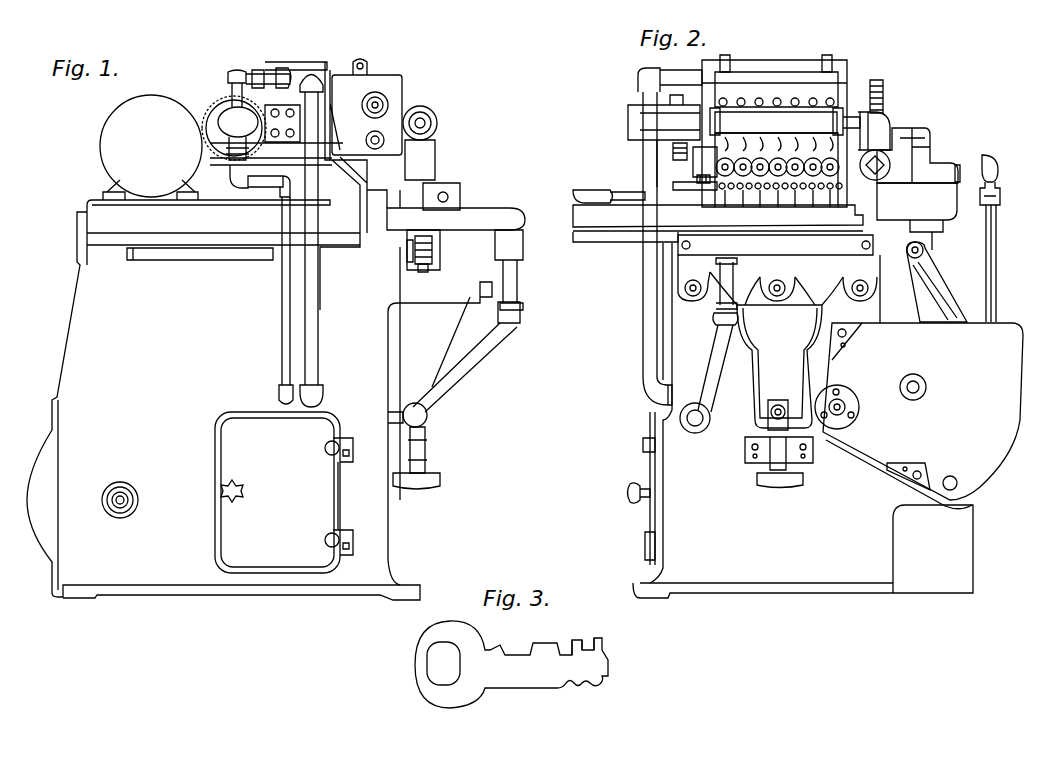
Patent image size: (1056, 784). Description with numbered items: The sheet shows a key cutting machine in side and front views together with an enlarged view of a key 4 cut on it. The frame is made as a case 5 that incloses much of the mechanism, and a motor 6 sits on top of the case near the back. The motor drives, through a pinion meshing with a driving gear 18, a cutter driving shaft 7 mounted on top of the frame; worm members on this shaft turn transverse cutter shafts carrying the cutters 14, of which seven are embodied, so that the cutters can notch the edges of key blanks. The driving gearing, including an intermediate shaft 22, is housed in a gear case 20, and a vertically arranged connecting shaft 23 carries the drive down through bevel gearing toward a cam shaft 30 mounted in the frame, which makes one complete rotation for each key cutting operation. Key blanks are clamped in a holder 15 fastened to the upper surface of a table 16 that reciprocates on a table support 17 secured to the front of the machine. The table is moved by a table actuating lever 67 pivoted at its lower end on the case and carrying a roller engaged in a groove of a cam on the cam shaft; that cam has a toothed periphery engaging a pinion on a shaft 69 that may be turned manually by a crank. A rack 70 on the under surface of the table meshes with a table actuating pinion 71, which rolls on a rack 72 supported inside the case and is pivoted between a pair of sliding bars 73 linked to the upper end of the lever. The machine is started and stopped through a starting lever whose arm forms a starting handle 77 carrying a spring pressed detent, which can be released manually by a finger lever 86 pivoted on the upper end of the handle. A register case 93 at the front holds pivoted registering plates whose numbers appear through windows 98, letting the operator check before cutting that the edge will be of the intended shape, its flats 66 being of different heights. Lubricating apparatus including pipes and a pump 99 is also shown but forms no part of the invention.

In FIG. 3, the key 4 is at (541, 680).
In FIG. 1, the case 5 is at (68, 368).
In FIG. 2, the case 5 is at (672, 463).
In FIG. 1, the motor 6 is at (108, 143).
In FIG. 1, the cutter driving shaft 7 is at (440, 372).
In FIG. 1, the cutters 14 is at (428, 150).
In FIG. 2, the cutters 14 is at (722, 165).
In FIG. 1, the holder 15 is at (450, 183).
In FIG. 2, the holder 15 is at (695, 180).
In FIG. 1, the table 16 is at (500, 218).
In FIG. 2, the table 16 is at (612, 222).
In FIG. 2, the table support 17 is at (690, 272).
In FIG. 1, the driving gear 18 is at (202, 110).
In FIG. 2, the driving gear 18 is at (885, 95).
In FIG. 2, the gear case 20 is at (925, 150).
In FIG. 2, the intermediate shaft 22 is at (962, 173).
In FIG. 2, the connecting shaft 23 is at (928, 245).
In FIG. 2, the cam shaft 30 is at (920, 388).
In FIG. 3, the flats 66 is at (585, 645).
In FIG. 2, the table actuating lever 67 is at (955, 323).
In FIG. 2, the shaft 69 is at (846, 407).
In FIG. 1, the rack 70 is at (423, 240).
In FIG. 1, the table actuating pinion 71 is at (434, 250).
In FIG. 1, the rack 72 is at (423, 272).
In FIG. 1, the sliding bars 73 is at (407, 255).
In FIG. 2, the starting handle 77 is at (997, 293).
In FIG. 2, the finger lever 86 is at (1000, 183).
In FIG. 1, the register case 93 is at (380, 85).
In FIG. 2, the register case 93 is at (785, 78).
In FIG. 2, the windows 98 is at (742, 104).
In FIG. 1, the pump 99 is at (225, 128).